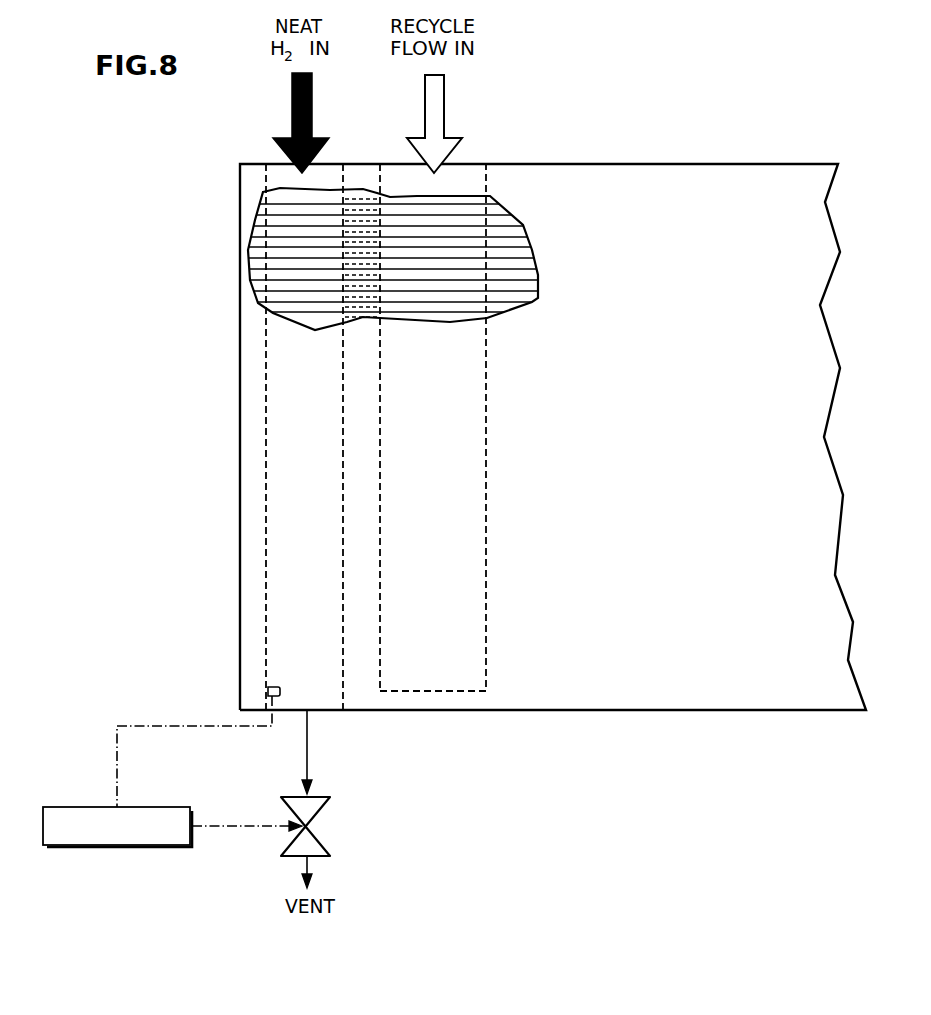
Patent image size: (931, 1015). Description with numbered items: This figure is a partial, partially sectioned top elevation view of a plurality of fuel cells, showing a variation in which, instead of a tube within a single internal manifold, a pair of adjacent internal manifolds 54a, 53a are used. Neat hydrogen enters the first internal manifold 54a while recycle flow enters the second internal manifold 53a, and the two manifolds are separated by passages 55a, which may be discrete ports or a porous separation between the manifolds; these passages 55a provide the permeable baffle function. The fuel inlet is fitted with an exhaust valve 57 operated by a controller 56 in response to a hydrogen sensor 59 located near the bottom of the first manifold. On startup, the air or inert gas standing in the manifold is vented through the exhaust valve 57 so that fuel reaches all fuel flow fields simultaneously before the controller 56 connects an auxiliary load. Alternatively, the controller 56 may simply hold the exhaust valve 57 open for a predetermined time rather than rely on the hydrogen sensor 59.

The internal manifold 54a is at (266, 190).
The passages 55a is at (353, 193).
The internal manifold 53a is at (486, 190).
The hydrogen sensor 59 is at (267, 687).
The controller 56 is at (162, 807).
The exhaust valve 57 is at (313, 830).